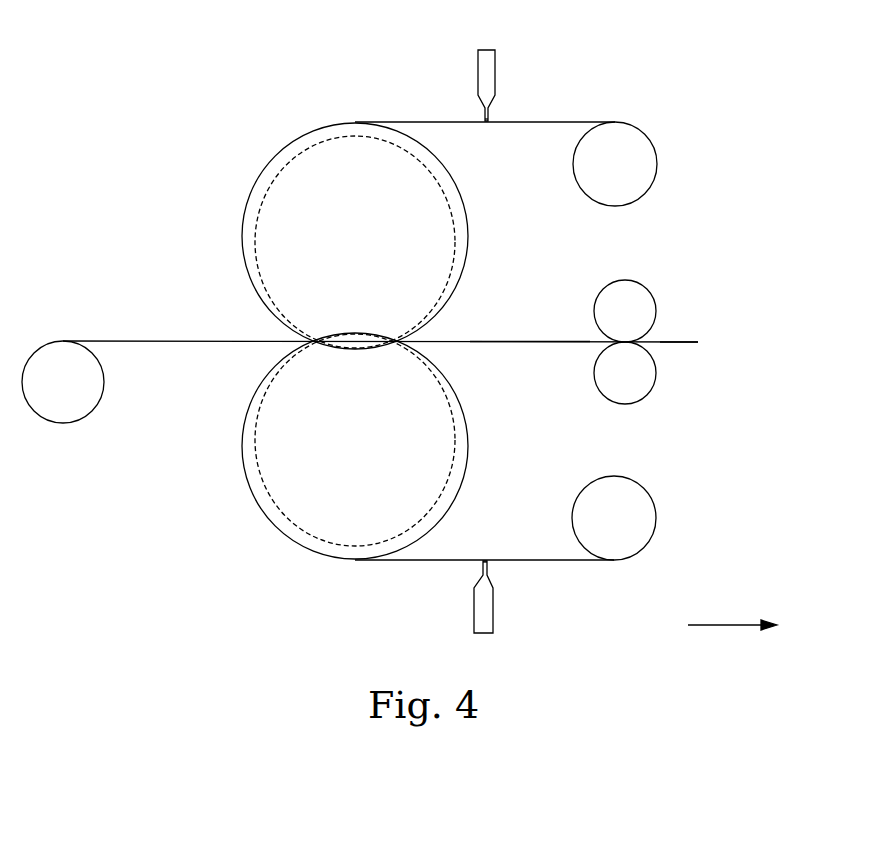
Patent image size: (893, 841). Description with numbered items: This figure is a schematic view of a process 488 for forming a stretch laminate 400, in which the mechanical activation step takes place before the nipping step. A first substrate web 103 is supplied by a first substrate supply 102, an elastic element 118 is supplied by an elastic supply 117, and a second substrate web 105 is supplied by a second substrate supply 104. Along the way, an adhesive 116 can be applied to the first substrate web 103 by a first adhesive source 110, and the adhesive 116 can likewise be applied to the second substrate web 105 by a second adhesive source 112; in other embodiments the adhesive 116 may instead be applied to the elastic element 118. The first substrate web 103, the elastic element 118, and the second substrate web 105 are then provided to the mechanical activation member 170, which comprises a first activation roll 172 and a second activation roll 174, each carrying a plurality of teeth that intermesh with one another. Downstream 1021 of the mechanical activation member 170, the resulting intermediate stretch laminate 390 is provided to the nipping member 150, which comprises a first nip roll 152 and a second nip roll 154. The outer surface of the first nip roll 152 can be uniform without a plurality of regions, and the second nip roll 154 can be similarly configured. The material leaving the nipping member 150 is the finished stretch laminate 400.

The process 488 is at (150, 84).
The mechanical activation member 170 is at (272, 118).
The first activation roll 172 is at (277, 222).
The second activation roll 174 is at (280, 478).
The elastic element 118 is at (155, 338).
The elastic supply 117 is at (62, 408).
The first substrate web 103 is at (552, 120).
The first substrate supply 102 is at (643, 153).
The first adhesive source 110 is at (487, 56).
The adhesive 116 is at (483, 118).
The nipping member 150 is at (680, 278).
The first nip roll 152 is at (613, 308).
The second nip roll 154 is at (635, 380).
The stretch laminate 400 is at (673, 342).
The intermediate stretch laminate 390 is at (492, 345).
The second substrate supply 104 is at (633, 513).
The second substrate web 105 is at (560, 563).
The second adhesive source 112 is at (487, 615).
The downstream direction 1021 is at (733, 625).